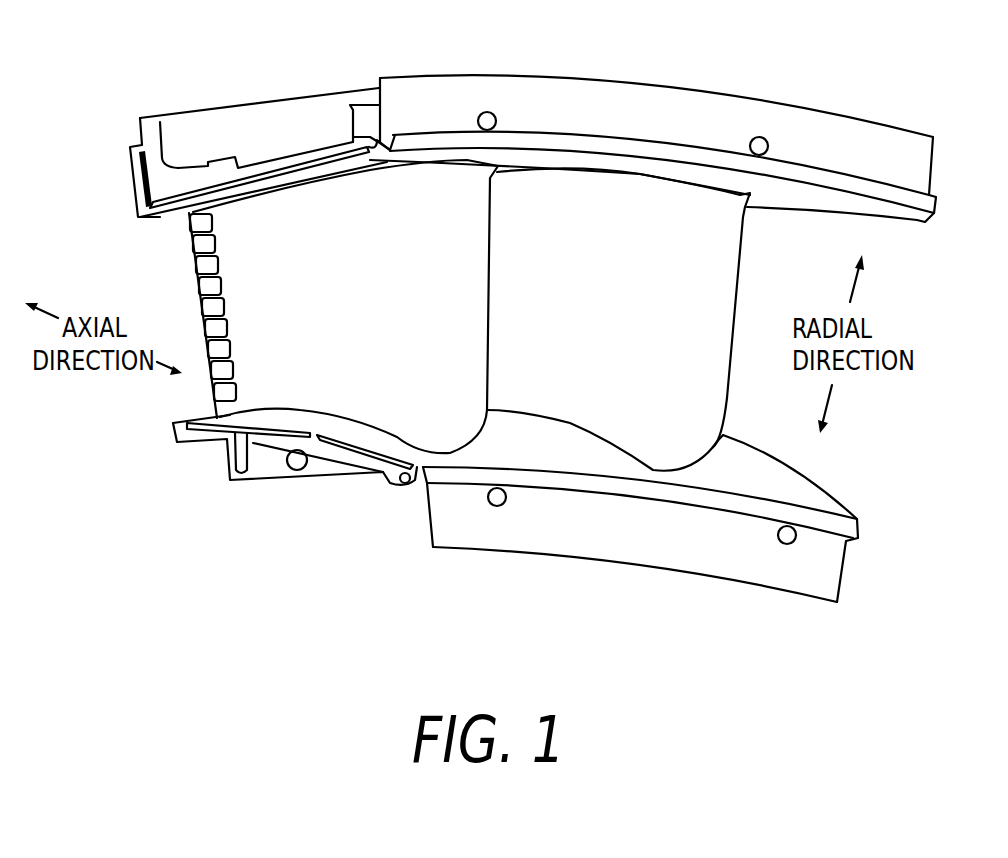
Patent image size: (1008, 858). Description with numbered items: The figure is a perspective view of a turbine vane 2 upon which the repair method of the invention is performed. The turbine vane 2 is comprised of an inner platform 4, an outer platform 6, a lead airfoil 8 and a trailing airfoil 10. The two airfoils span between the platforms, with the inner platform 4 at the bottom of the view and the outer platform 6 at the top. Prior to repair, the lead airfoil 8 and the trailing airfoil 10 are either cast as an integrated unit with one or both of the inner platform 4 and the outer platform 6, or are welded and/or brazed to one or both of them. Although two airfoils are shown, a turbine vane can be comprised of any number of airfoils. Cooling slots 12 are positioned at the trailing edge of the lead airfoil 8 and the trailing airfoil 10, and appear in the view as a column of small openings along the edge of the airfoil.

The turbine vane 2 is at (165, 78).
The inner platform 4 is at (503, 453).
The outer platform 6 is at (418, 143).
The lead airfoil 8 is at (596, 304).
The trailing airfoil 10 is at (347, 290).
The cooling slots 12 is at (208, 242).